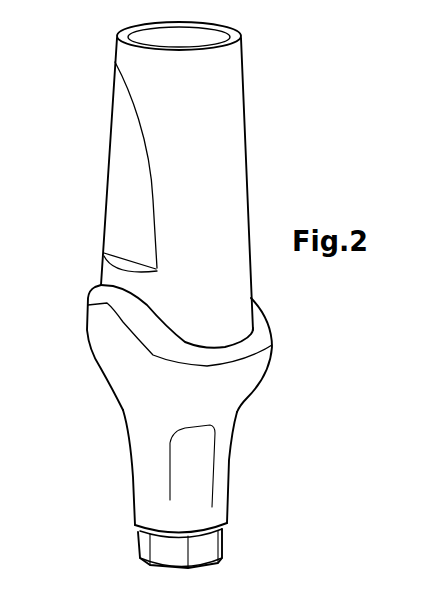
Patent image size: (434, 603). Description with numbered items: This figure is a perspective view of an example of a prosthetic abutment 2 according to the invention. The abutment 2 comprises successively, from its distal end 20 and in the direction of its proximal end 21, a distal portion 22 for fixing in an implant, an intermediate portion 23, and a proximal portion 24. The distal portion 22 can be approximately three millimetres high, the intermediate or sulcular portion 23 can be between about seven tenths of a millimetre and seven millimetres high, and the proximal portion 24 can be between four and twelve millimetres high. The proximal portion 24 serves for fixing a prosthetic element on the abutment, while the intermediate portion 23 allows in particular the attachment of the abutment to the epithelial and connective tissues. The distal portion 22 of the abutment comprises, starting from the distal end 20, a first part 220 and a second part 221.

The prosthetic abutment 2 is at (272, 113).
The proximal end 21 is at (223, 25).
The proximal portion 24 is at (68, 33).
The intermediate portion 23 is at (69, 290).
The distal portion 22 is at (70, 456).
The second part 221 is at (222, 460).
The first part 220 is at (221, 544).
The distal end 20 is at (210, 566).